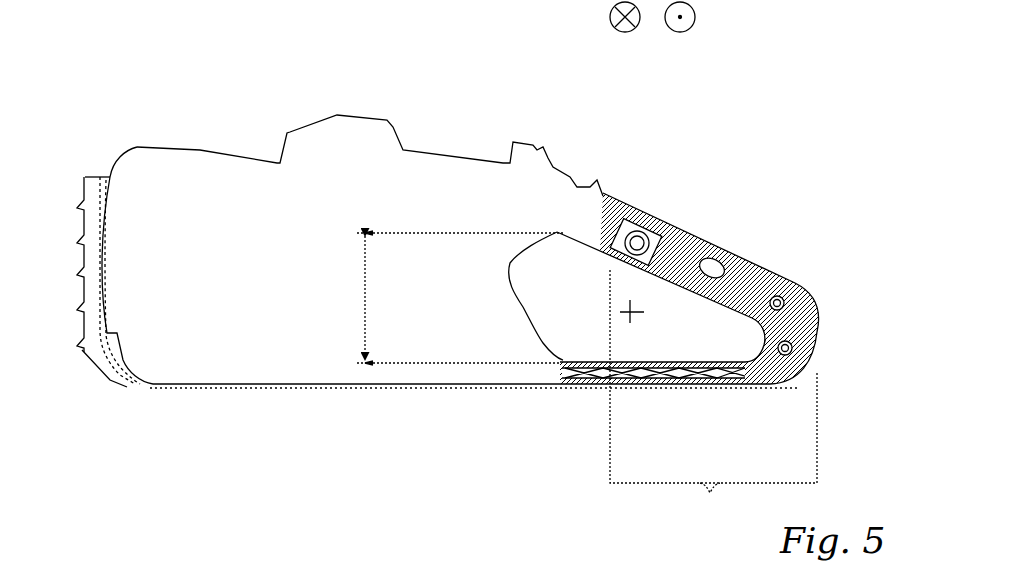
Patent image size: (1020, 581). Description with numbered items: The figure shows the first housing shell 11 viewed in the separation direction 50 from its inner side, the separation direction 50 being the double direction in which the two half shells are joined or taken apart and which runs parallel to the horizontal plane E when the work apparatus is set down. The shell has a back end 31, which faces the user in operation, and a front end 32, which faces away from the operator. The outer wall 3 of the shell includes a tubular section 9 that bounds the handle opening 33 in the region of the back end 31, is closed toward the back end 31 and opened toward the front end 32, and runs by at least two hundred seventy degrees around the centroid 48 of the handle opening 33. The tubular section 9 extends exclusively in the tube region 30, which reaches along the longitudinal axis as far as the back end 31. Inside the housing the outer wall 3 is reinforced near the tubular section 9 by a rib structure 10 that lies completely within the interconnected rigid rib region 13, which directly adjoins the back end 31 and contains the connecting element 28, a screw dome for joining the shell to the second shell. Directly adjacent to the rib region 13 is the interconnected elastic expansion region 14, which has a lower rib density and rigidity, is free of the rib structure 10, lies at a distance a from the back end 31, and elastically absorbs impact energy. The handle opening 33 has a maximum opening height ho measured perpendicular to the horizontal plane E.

The outer wall 3 is at (814, 323).
The tubular section 9 is at (728, 262).
The rib structure 10 is at (815, 352).
The first housing shell 11 is at (208, 451).
The interconnected rigid rib region 13 is at (815, 352).
The interconnected elastic expansion region 14 is at (758, 329).
The connecting element 28 is at (775, 290).
The tube region 30 is at (713, 395).
The back end 31 is at (825, 328).
The front end 32 is at (88, 267).
The handle opening 33 is at (587, 333).
The centroid 48 is at (632, 311).
The separation direction 50 is at (630, 32).
The distance a is at (819, 341).
The horizontal plane E is at (237, 387).
The maximum opening height ho is at (365, 293).